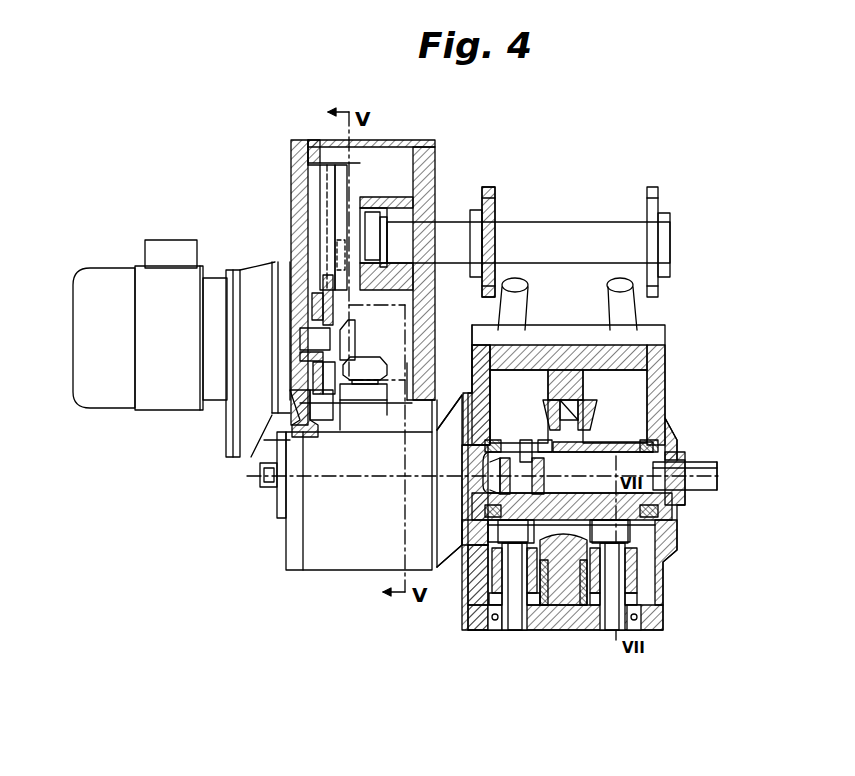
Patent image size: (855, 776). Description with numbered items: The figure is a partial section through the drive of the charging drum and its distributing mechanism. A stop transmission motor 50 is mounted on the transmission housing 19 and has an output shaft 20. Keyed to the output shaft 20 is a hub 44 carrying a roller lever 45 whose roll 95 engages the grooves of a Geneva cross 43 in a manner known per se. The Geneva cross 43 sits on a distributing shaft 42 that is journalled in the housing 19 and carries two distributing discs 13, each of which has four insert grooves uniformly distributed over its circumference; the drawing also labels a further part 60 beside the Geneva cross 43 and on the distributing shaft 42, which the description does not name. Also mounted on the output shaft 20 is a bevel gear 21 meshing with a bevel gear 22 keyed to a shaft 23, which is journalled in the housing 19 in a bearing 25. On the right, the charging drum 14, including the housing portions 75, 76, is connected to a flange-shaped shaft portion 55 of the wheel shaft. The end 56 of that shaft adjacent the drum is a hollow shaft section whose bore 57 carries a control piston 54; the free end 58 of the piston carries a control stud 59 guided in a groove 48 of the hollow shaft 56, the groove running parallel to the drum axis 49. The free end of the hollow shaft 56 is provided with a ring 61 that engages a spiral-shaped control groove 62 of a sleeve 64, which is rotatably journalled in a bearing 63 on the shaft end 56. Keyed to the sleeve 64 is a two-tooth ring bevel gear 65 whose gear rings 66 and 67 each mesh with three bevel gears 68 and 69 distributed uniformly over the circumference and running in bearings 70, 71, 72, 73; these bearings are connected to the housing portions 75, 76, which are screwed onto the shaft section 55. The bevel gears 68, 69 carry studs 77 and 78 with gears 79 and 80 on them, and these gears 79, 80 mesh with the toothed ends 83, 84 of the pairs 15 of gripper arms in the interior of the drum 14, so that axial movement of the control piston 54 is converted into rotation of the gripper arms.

The distributing discs 13 is at (648, 192).
The charging drum 14 is at (655, 362).
The pair of gripper arms 15 is at (614, 302).
The transmission housing 19 is at (346, 556).
The output shaft 20 is at (318, 338).
The bevel gear 21 is at (348, 330).
The bevel gear 22 is at (365, 365).
The shaft 23 is at (358, 408).
The bearing 25 is at (365, 400).
The distributing shaft 42 is at (556, 234).
The Geneva cross 43 is at (316, 205).
The hub 44 is at (322, 272).
The roller lever 45 is at (240, 412).
The groove 48 is at (596, 462).
The axis 49 is at (718, 472).
The stop transmission motor 50 is at (175, 290).
The control piston 54 is at (688, 468).
The flange-shaped shaft portion 55 is at (456, 402).
The hollow shaft section 56 is at (678, 502).
The bore 57 is at (500, 480).
The free end 58 is at (502, 476).
The control stud 59 is at (545, 474).
The disc 60 is at (336, 162).
The ring 61 is at (526, 442).
The spiral-shaped control groove 62 is at (540, 445).
The bearing 63 is at (492, 441).
The sleeve 64 is at (600, 444).
The two-tooth ring bevel gear 65 is at (580, 420).
The gear ring 66 is at (585, 405).
The gear ring 67 is at (548, 410).
The bevel gear 68 is at (662, 562).
The bevel gear 69 is at (482, 582).
The bearing 70 is at (670, 540).
The bearing 71 is at (640, 630).
The bearing 72 is at (482, 540).
The bearing 73 is at (504, 632).
The housing portion 75 is at (480, 563).
The housing portion 76 is at (622, 569).
The stud 77 is at (604, 632).
The stud 78 is at (512, 632).
The gear 79 is at (598, 632).
The gear 80 is at (530, 632).
The toothed end 83 is at (478, 632).
The toothed end 84 is at (578, 632).
The roll 95 is at (292, 430).